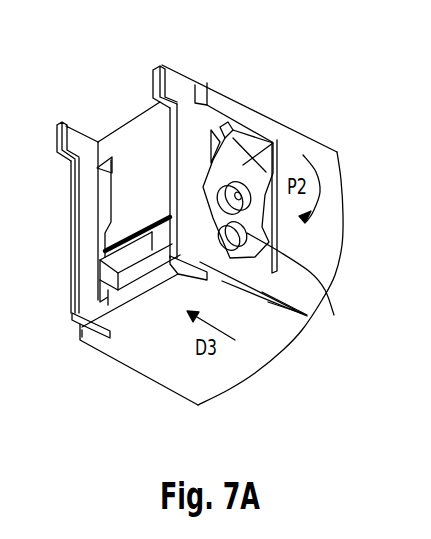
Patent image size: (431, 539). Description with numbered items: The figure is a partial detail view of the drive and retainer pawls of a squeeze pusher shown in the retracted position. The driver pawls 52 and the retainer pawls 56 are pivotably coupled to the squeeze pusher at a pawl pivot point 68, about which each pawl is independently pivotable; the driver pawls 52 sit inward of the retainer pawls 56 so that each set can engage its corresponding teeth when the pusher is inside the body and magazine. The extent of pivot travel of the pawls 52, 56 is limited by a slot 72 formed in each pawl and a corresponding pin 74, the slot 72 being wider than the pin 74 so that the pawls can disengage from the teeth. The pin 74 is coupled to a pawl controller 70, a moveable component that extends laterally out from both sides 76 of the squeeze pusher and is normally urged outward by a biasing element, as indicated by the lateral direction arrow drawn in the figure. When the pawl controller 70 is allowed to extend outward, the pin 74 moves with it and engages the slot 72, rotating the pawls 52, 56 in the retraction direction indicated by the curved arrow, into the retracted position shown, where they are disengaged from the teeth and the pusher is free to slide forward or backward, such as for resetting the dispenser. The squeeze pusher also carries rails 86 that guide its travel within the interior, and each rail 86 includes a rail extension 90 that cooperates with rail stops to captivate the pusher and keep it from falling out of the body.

The driver pawl 52 is at (104, 240).
The retainer pawl 56 is at (240, 163).
The pawl pivot point 68 is at (243, 202).
The pawl controller 70 is at (123, 260).
The slot 72 is at (334, 315).
The pin 74 is at (303, 320).
The sides of the squeeze pusher 76 is at (153, 282).
The rail 86 is at (182, 146).
The rail extension 90 is at (70, 135).